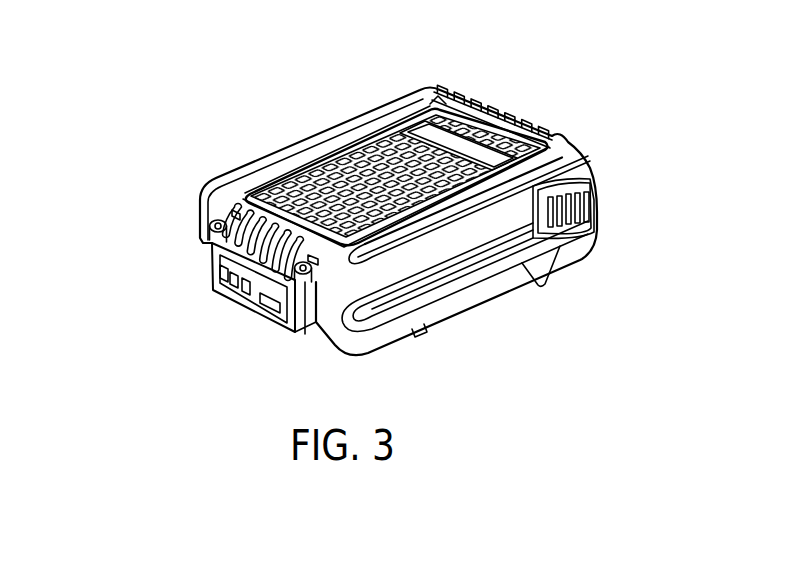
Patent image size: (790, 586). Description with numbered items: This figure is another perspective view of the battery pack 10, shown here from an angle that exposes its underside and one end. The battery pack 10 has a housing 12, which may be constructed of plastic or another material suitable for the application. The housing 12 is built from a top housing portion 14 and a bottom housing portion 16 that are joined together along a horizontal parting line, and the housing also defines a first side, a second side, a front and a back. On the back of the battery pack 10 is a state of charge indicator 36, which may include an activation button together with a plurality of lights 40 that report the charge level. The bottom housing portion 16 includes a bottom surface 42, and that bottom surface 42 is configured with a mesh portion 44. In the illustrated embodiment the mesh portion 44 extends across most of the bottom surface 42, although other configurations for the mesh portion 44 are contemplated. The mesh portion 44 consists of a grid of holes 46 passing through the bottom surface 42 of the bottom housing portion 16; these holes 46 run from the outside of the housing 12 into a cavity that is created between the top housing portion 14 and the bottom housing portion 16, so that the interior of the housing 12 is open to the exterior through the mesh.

The battery pack 10 is at (565, 98).
The housing 12 is at (158, 182).
The top housing portion 14 is at (305, 332).
The bottom housing portion 16 is at (564, 170).
The state of charge indicator 36 is at (255, 303).
The lights 40 is at (225, 275).
The bottom surface 42 is at (358, 133).
The mesh portion 44 is at (313, 186).
The holes 46 is at (440, 94).